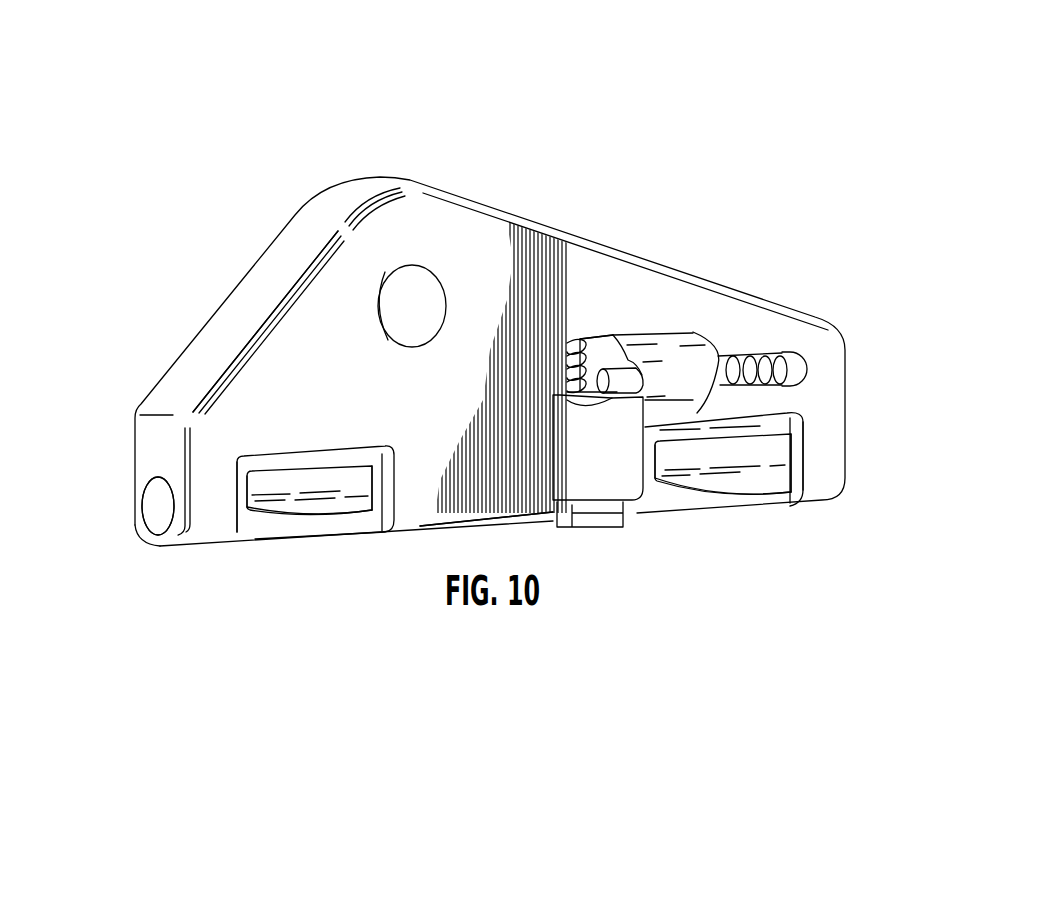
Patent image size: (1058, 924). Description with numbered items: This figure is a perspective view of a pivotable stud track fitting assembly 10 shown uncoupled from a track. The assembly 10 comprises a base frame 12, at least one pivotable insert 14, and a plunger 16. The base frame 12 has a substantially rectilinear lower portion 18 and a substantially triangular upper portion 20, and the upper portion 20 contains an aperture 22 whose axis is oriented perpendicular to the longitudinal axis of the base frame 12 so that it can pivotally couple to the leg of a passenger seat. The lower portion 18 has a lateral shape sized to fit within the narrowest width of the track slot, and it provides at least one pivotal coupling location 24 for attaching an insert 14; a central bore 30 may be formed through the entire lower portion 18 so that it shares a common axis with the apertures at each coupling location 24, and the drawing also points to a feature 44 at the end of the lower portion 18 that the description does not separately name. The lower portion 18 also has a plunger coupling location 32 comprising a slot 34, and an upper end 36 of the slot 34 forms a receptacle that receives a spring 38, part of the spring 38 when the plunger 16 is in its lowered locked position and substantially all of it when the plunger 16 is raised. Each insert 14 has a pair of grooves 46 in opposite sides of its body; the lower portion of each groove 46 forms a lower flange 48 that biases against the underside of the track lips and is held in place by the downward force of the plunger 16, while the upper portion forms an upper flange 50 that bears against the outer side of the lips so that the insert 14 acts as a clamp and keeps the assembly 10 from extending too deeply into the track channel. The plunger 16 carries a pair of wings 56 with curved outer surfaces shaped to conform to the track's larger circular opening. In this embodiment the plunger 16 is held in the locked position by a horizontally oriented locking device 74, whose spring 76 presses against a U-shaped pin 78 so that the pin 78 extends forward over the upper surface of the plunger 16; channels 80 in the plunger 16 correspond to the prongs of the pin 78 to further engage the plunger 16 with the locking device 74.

The pivotable stud track fitting assembly 10 is at (710, 120).
The base frame 12 is at (192, 372).
The pivotable insert 14 is at (280, 526).
The plunger 16 is at (622, 488).
The lower portion 18 is at (197, 452).
The upper portion 20 is at (272, 267).
The aperture 22 is at (400, 283).
The pivotal coupling location 24 is at (235, 473).
The central bore 30 is at (143, 507).
The plunger coupling location 32 is at (602, 337).
The slot 34 is at (613, 357).
The upper end 36 is at (586, 334).
The spring 38 is at (568, 343).
The mounting hole 44 is at (160, 503).
The groove 46 is at (317, 488).
The lower flange 48 is at (332, 537).
The upper flange 50 is at (368, 495).
The wings 56 is at (583, 470).
The locking device 74 is at (777, 355).
The spring 76 is at (750, 357).
The U-shaped pin 78 is at (623, 380).
The channels 80 is at (573, 403).